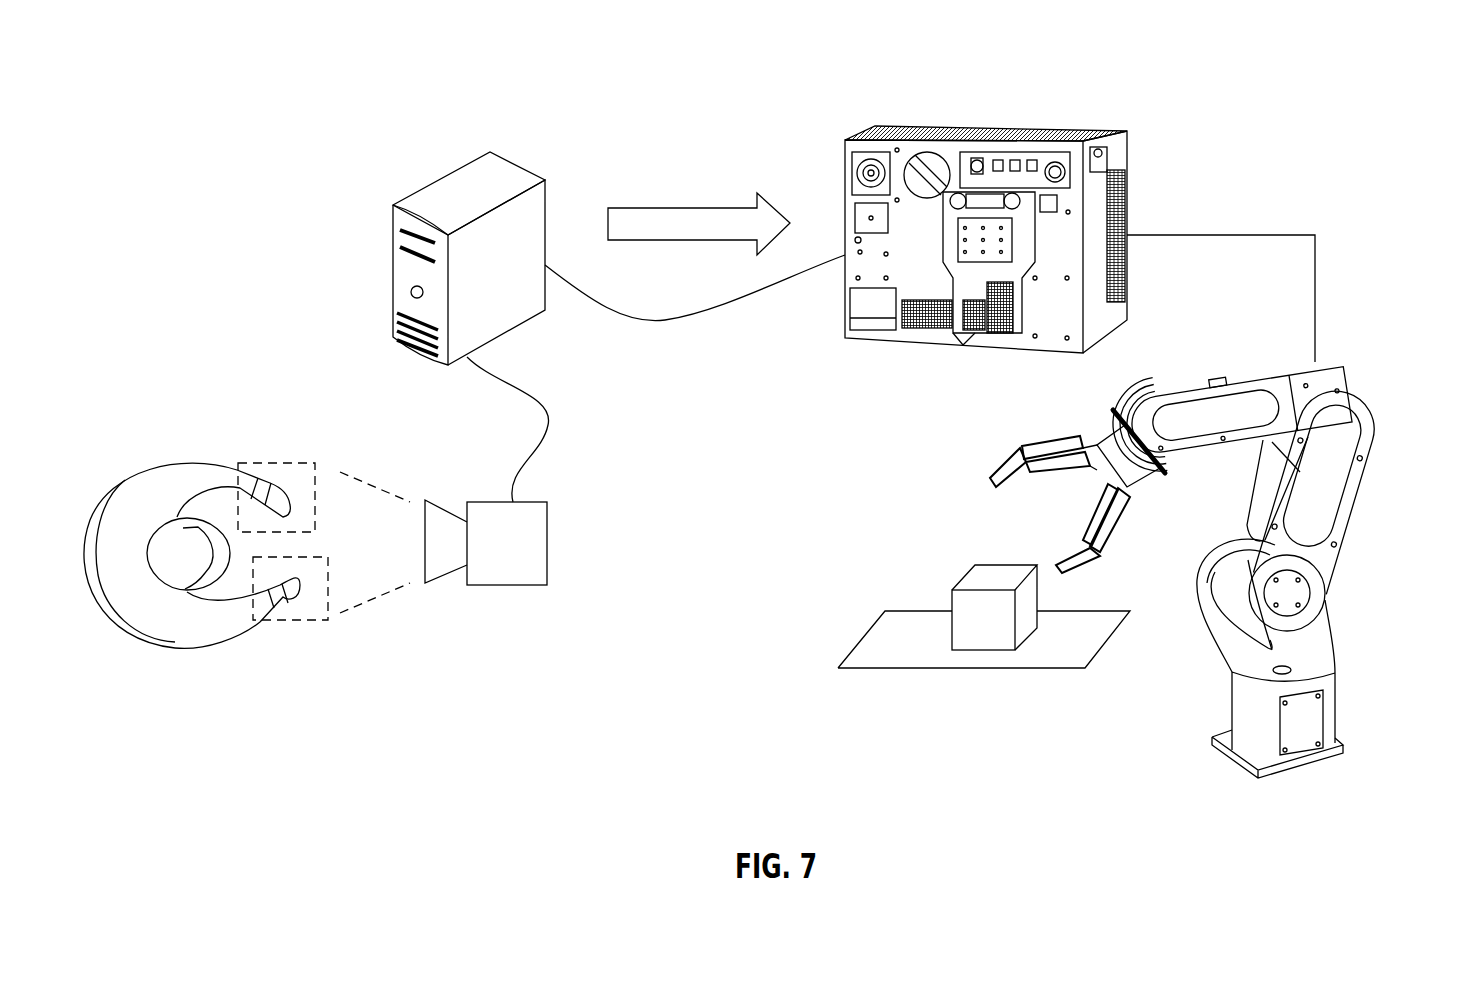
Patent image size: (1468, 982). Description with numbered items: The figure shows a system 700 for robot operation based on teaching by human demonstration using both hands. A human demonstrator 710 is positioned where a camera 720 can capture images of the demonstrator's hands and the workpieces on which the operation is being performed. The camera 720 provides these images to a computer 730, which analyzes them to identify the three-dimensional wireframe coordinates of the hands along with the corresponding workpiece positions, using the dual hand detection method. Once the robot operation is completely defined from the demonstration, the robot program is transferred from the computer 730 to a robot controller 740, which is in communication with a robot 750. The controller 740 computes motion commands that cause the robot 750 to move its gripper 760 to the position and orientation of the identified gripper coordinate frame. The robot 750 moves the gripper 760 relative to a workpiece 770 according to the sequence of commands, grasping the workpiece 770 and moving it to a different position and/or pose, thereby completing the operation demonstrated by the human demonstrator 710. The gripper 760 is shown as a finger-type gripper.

The system 700 is at (226, 78).
The human demonstrator 710 is at (172, 647).
The camera 720 is at (500, 585).
The computer 730 is at (432, 180).
The robot controller 740 is at (1133, 183).
The robot 750 is at (1362, 590).
The gripper 760 is at (988, 436).
The workpiece 770 is at (965, 578).